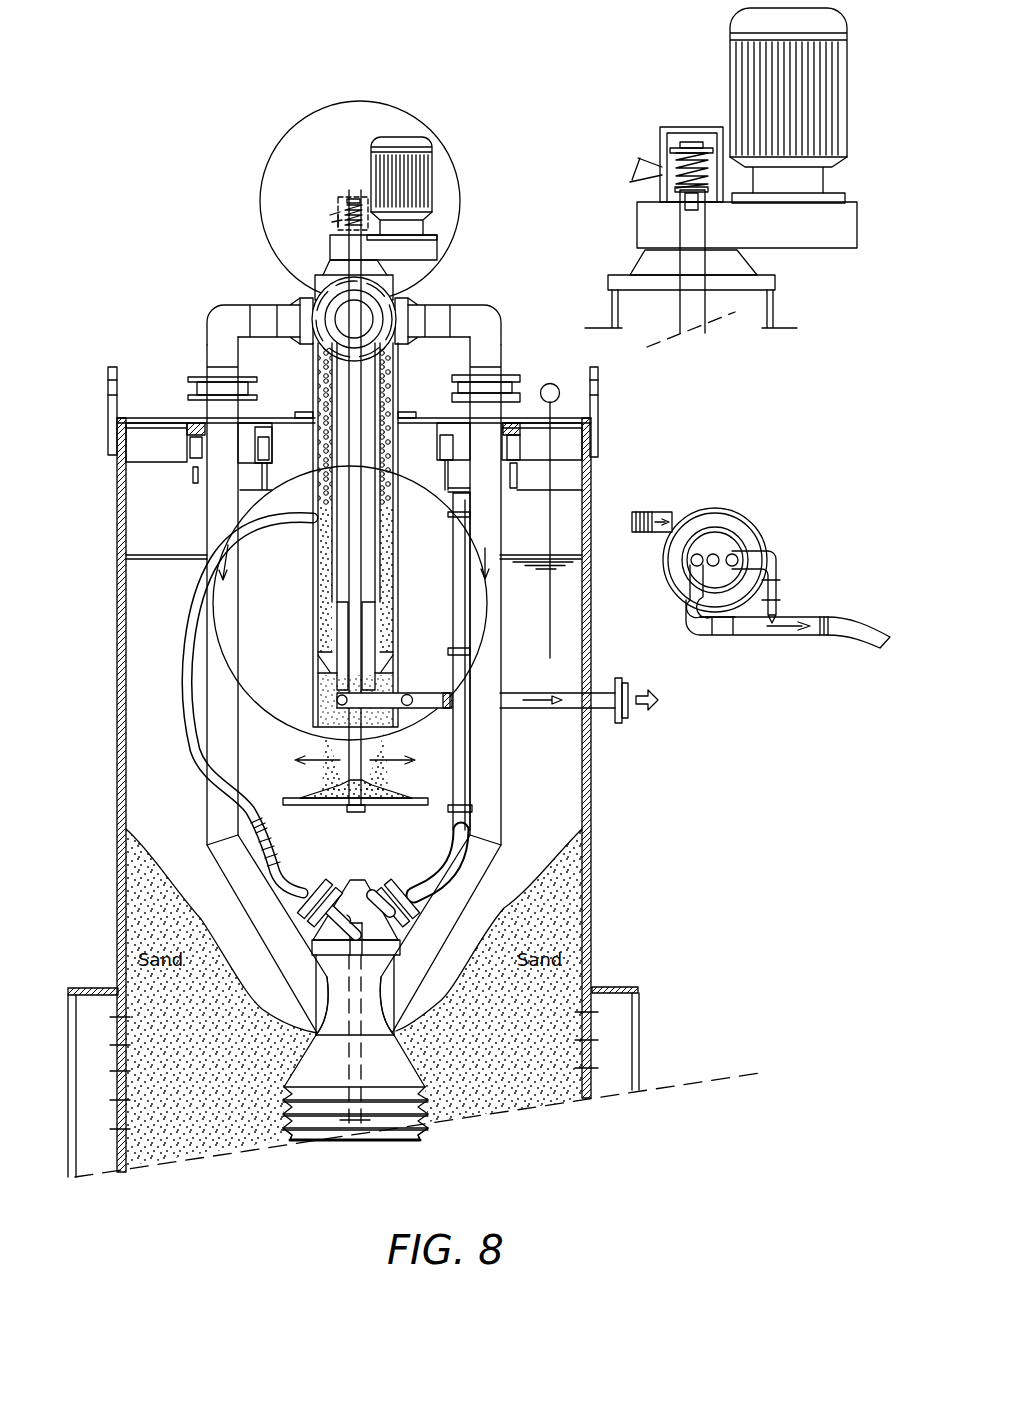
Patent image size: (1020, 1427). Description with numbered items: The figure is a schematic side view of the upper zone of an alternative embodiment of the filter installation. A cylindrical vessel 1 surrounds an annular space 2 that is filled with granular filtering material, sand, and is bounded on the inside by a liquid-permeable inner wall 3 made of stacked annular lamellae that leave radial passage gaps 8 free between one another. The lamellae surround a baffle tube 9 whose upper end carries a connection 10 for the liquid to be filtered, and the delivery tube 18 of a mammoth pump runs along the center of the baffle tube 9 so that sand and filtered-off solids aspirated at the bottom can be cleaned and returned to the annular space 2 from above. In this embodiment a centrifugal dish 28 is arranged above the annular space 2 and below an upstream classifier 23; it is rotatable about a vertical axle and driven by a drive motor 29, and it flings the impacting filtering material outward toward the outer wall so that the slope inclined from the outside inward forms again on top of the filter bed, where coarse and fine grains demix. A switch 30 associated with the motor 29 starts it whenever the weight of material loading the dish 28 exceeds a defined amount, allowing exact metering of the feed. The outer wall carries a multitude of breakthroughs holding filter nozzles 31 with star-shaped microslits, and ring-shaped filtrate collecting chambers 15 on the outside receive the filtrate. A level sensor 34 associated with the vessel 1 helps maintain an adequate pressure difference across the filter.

The cylindrical vessel 1 is at (592, 870).
The annular space 2 is at (558, 975).
The inner wall 3 is at (422, 1120).
The radial passage gaps 8 is at (318, 1078).
The baffle tube 9 is at (345, 928).
The connection 10 is at (502, 778).
The filtrate collecting chambers 15 is at (620, 1062).
The delivery tube 18 is at (690, 509).
The upstream classifier 23 is at (400, 541).
The centrifugal dish 28 is at (428, 800).
The drive motor 29 is at (400, 137).
The switch 30 is at (340, 201).
The filter nozzles 31 is at (593, 1033).
The level sensor 34 is at (557, 388).